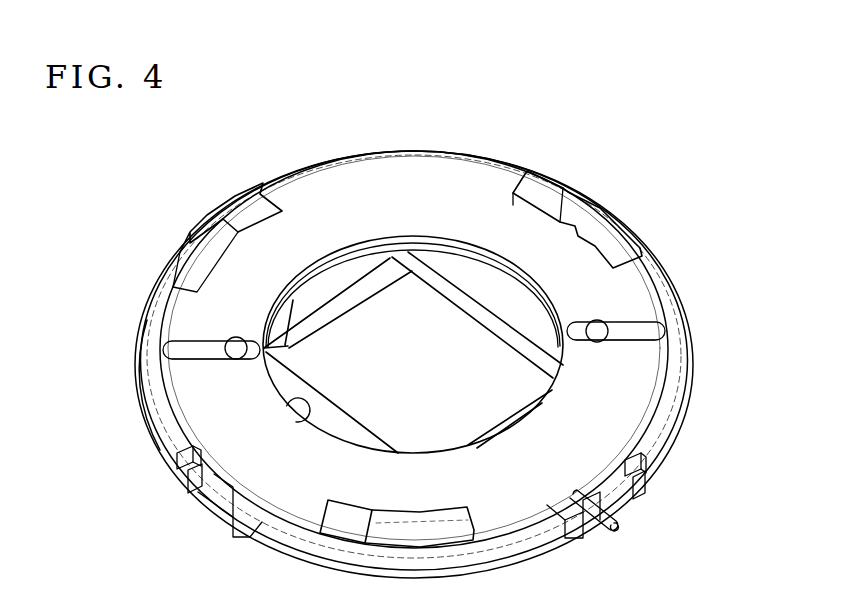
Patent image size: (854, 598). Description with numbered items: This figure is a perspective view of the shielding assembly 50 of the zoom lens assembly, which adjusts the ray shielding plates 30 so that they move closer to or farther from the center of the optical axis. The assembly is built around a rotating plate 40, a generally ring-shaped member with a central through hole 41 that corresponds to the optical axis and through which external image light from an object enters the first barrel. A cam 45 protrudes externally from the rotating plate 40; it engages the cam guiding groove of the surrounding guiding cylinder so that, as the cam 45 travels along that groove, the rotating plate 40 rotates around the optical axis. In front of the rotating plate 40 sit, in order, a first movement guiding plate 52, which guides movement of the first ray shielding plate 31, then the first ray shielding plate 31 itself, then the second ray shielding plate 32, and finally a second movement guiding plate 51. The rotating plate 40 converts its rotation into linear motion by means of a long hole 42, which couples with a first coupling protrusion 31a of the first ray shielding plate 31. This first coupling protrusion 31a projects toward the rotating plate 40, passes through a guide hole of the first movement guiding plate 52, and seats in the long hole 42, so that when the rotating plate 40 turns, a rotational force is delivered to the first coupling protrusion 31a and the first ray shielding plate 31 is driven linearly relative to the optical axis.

The ray shielding plates 30 is at (413, 257).
The first ray shielding plate 31 is at (457, 267).
The second ray shielding plate 32 is at (362, 268).
The first coupling protrusion 31a is at (233, 340).
The rotating plate 40 is at (607, 392).
The through hole 41 is at (312, 416).
The long hole 42 is at (628, 330).
The cam 45 is at (617, 527).
The shielding assembly 50 is at (648, 170).
The second movement guiding plate 51 is at (165, 467).
The first movement guiding plate 52 is at (157, 397).